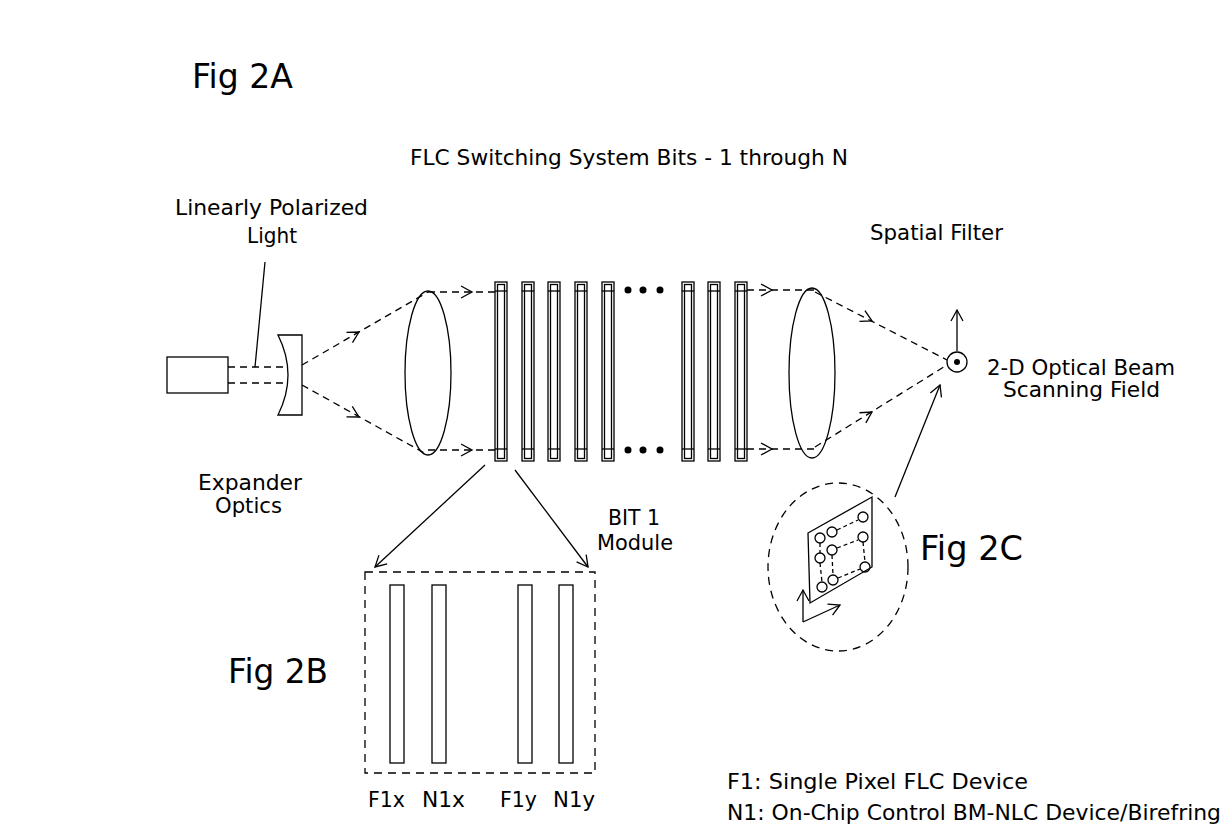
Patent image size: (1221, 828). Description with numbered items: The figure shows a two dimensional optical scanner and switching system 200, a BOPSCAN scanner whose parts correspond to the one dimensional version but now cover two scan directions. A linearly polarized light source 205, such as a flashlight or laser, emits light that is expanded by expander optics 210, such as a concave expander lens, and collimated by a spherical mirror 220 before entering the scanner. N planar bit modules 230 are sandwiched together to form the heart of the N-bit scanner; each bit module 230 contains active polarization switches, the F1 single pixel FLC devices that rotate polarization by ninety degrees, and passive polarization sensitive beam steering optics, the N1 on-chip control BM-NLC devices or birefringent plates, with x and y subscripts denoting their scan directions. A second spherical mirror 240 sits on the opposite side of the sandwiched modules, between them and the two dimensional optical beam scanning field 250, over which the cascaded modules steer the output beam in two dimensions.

In FIG. 2A, the two dimensional optical scanner and switching system 200 is at (492, 120).
In FIG. 2A, the linearly polarized light source 205 is at (188, 368).
In FIG. 2A, the expander optics 210 is at (290, 408).
In FIG. 2A, the spherical mirror 220 is at (437, 455).
In FIG. 2A, the bit module 230 is at (508, 277).
In FIG. 2B, the bit module 230 is at (365, 737).
In FIG. 2A, the second spherical mirror 240 is at (812, 313).
In FIG. 2A, the 2-D optical beam scanning field 250 is at (970, 353).
In FIG. 2C, the 2-D optical beam scanning field 250 is at (788, 623).